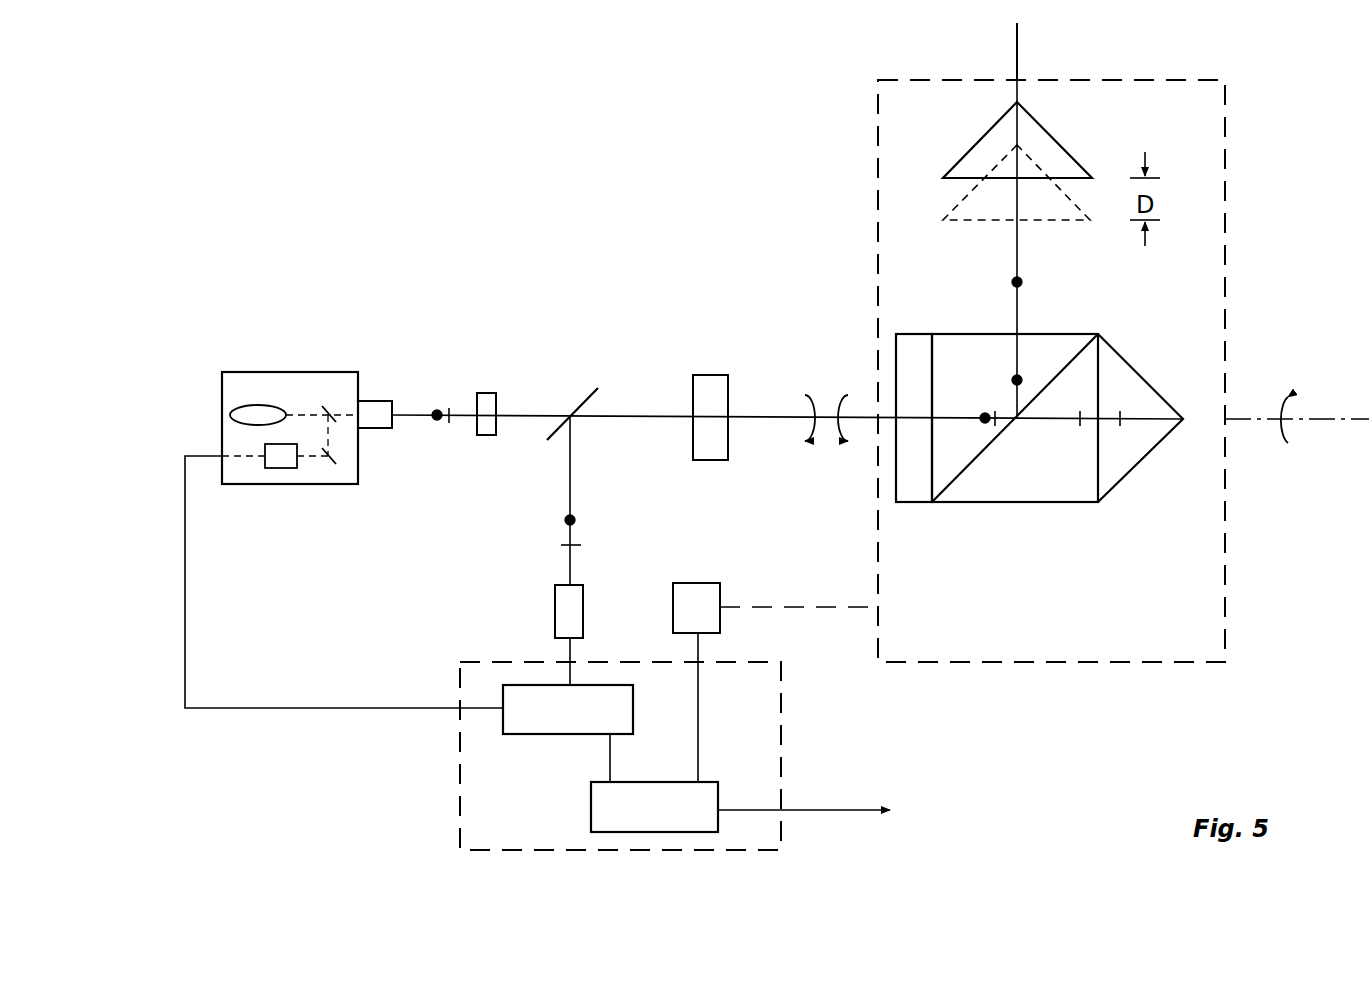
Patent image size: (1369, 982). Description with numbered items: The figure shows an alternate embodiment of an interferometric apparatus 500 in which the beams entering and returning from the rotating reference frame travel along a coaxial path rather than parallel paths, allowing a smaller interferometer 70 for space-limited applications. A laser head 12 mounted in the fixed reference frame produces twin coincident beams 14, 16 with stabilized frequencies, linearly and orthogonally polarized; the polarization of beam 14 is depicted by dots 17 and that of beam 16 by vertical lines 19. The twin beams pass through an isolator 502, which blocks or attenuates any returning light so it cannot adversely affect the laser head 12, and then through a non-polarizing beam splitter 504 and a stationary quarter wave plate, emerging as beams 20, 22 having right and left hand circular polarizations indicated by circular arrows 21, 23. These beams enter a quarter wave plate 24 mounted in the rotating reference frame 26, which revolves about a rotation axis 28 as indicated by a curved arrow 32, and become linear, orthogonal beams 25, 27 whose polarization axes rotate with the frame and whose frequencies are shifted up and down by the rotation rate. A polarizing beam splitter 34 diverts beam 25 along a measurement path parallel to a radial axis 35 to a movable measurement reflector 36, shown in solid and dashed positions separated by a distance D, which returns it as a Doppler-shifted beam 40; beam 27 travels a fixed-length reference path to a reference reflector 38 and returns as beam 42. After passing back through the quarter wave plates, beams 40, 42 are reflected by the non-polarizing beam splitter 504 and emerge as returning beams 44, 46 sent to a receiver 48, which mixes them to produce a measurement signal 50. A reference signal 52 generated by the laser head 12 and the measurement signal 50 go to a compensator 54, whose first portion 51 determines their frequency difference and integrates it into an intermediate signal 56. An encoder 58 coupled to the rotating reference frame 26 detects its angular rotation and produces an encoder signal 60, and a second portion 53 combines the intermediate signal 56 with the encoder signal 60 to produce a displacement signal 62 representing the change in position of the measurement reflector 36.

The apparatus 500 is at (330, 163).
The laser head 12 is at (243, 372).
The light beam 14 is at (406, 412).
The light beam 16 is at (422, 412).
The dots 17 is at (440, 412).
The vertical lines 19 is at (452, 425).
The isolator 502 is at (487, 393).
The non-polarizing beam splitter 504 is at (578, 395).
The beam 20 is at (750, 410).
The beam 22 is at (768, 410).
The circular arrow 21 is at (808, 437).
The circular arrow 23 is at (848, 442).
The rotating reference frame 26 is at (930, 80).
The radial axis 35 is at (1022, 55).
The measurement reflector 36 is at (1045, 128).
The beam 40 is at (1020, 300).
The quarter wave plate 24 is at (912, 334).
The beam 25 is at (946, 413).
The beam 27 is at (971, 413).
The beam 42 is at (1008, 460).
The polarizing beam splitter 34 is at (972, 504).
The reference reflector 38 is at (1116, 488).
The interferometer 70 is at (1078, 540).
The rotation axis 28 is at (1323, 420).
The curved arrow 32 is at (1270, 395).
The returning beam 44 is at (566, 490).
The returning beam 46 is at (560, 511).
The receiver 48 is at (555, 613).
The measurement signal 50 is at (564, 657).
The encoder 58 is at (673, 607).
The encoder signal 60 is at (702, 651).
The compensator 54 is at (458, 762).
The first portion of compensator 51 is at (525, 734).
The reference signal 52 is at (183, 583).
The intermediate signal 56 is at (613, 757).
The second portion of compensator 53 is at (591, 812).
The displacement signal 62 is at (828, 810).